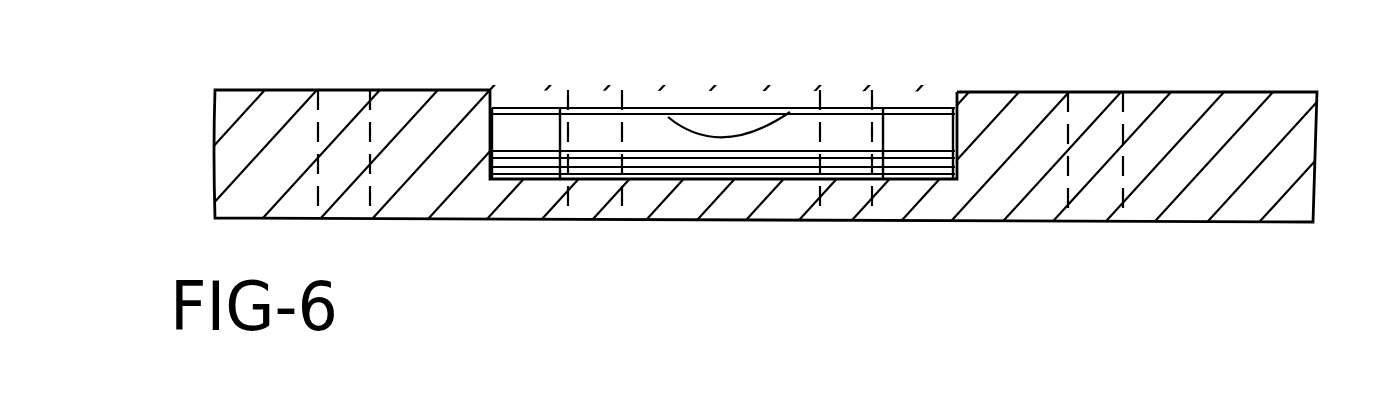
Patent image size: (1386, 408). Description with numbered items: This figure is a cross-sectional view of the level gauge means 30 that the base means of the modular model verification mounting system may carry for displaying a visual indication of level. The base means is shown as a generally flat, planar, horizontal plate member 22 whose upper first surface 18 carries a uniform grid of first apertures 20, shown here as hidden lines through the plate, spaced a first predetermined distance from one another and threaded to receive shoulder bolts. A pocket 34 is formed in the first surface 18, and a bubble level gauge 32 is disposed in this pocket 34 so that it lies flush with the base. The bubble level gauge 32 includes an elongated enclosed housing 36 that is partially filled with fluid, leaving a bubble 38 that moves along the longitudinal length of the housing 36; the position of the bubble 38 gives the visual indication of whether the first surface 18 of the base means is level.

The first surface 18 is at (1255, 92).
The first apertures 20 is at (1123, 140).
The plate member 22 is at (237, 145).
The level gauge means 30 is at (610, 72).
The bubble level gauge 32 is at (767, 163).
The pocket 34 is at (955, 103).
The housing 36 is at (517, 107).
The bubble 38 is at (686, 130).